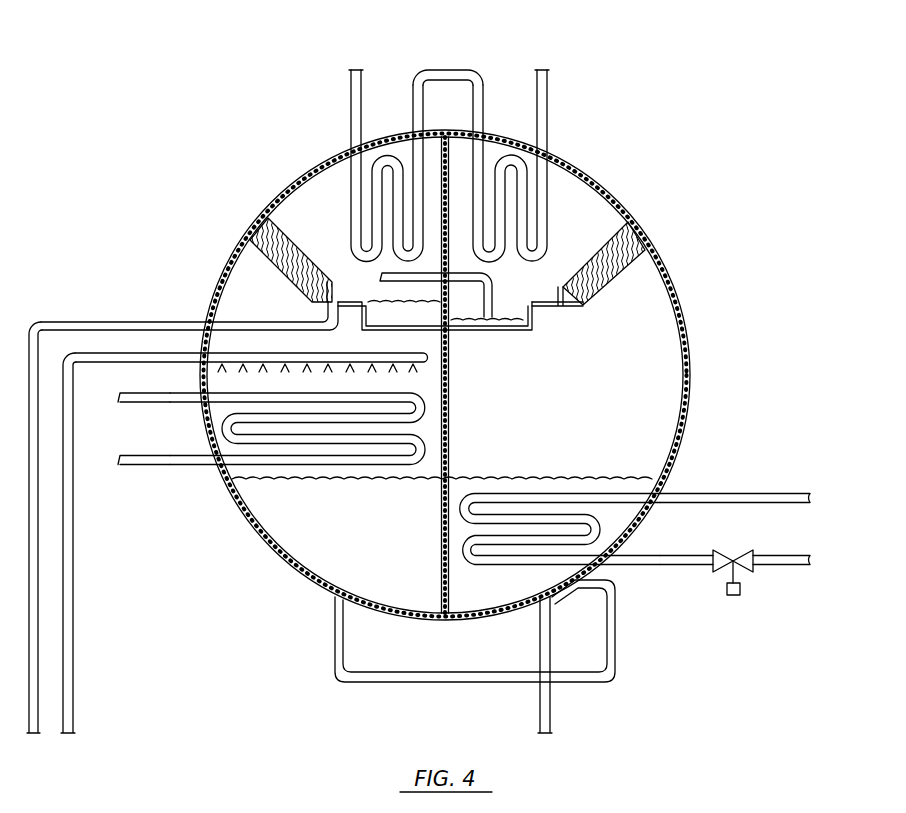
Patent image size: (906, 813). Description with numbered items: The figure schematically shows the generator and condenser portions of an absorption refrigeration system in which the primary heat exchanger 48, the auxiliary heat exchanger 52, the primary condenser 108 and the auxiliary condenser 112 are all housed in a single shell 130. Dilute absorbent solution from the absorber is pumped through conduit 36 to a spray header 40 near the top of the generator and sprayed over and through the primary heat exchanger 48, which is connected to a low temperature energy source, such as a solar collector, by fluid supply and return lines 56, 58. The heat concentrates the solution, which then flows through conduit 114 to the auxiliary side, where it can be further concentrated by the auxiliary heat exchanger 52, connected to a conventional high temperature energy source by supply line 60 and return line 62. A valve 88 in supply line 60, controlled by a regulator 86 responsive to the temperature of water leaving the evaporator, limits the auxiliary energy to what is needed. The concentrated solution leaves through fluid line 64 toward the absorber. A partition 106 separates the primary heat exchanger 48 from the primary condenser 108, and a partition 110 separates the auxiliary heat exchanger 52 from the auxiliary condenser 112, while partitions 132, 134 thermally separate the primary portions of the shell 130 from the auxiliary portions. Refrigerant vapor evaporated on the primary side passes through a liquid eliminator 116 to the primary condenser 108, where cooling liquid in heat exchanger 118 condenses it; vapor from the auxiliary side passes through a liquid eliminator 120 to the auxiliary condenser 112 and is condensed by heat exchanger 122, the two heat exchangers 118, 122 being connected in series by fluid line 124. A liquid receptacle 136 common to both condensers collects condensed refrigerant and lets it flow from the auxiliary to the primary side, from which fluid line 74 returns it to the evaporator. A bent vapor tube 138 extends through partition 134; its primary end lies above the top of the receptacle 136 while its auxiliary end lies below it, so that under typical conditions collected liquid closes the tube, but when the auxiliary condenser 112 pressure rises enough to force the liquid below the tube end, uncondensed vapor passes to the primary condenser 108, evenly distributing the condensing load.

The conduit 36 is at (75, 661).
The spray header 40 is at (282, 354).
The primary heat exchanger 48 is at (288, 465).
The auxiliary heat exchanger 52 is at (563, 493).
The fluid supply line 56 is at (170, 465).
The fluid return line 58 is at (170, 403).
The supply line 60 is at (640, 567).
The return line 62 is at (715, 493).
The fluid line 64 is at (552, 700).
The fluid line 74 is at (40, 635).
The regulator 86 is at (743, 597).
The valve 88 is at (737, 552).
The partition 106 is at (317, 308).
The primary condenser 108 is at (319, 220).
The partition 110 is at (557, 317).
The auxiliary condenser 112 is at (576, 220).
The conduit 114 is at (333, 628).
The liquid eliminator 116 is at (264, 268).
The heat exchanger 118 is at (349, 193).
The liquid eliminator 120 is at (617, 273).
The heat exchanger 122 is at (546, 193).
The fluid line 124 is at (452, 67).
The single shell 130 is at (690, 352).
The partition 132 is at (450, 463).
The partition 134 is at (452, 165).
The liquid receptacle 136 is at (458, 333).
The vapor tube 138 is at (533, 317).